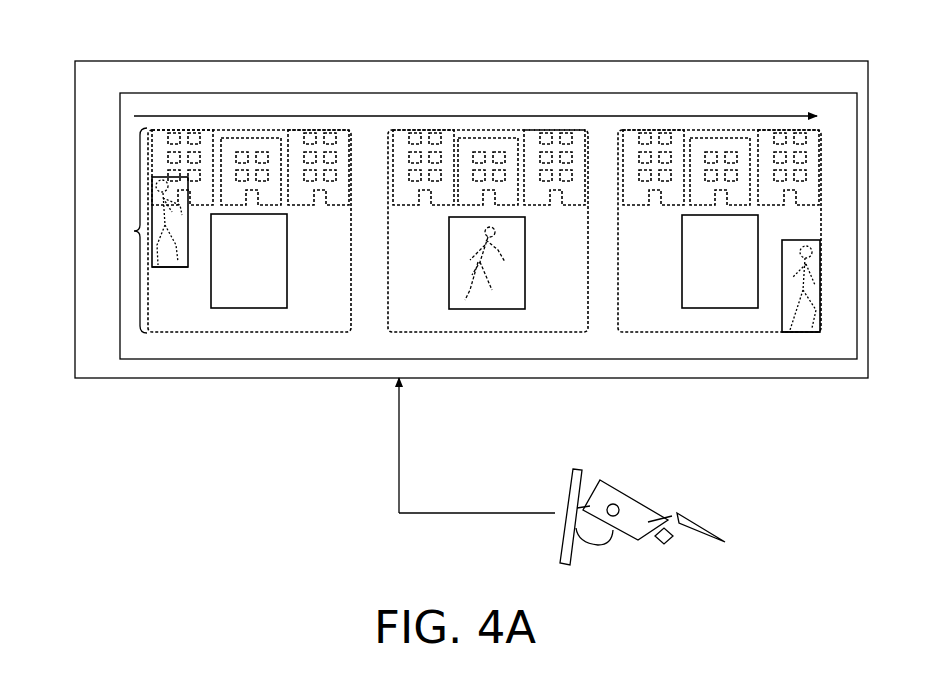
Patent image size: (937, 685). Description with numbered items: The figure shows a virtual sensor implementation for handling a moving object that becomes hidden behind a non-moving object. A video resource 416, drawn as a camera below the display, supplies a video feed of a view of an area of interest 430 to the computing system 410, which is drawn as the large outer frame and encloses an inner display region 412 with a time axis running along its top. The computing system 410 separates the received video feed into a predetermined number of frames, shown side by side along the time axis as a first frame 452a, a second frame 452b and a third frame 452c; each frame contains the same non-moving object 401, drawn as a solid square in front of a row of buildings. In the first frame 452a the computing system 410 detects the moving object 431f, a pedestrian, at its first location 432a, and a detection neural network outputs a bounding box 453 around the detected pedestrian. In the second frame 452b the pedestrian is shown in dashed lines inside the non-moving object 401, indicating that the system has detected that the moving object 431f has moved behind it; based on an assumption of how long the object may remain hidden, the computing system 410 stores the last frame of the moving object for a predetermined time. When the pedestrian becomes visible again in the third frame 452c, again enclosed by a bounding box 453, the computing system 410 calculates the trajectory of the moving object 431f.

The non-moving object 401 is at (260, 222).
The computing system 410 is at (662, 68).
The display area 412 is at (728, 102).
The video resource 416 is at (675, 513).
The area of interest 430 is at (125, 231).
The moving object 431f is at (152, 200).
The first location 432a is at (157, 233).
The first frame 452a is at (272, 318).
The second frame 452b is at (578, 325).
The third frame 452c is at (715, 322).
The bounding box 453 is at (177, 262).